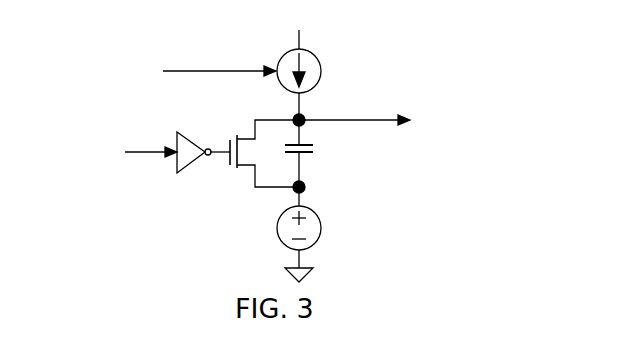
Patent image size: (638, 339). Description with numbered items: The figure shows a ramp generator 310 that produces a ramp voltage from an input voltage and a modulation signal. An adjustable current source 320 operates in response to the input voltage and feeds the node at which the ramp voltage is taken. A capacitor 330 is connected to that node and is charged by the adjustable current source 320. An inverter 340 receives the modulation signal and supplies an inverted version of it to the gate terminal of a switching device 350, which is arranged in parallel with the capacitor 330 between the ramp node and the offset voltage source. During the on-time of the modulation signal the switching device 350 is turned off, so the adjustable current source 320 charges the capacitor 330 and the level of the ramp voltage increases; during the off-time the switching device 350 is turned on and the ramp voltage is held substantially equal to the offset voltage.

The ramp generator 310 is at (99, 42).
The adjustable current source 320 is at (314, 57).
The capacitor 330 is at (311, 157).
The inverter 340 is at (208, 136).
The switching device 350 is at (232, 171).